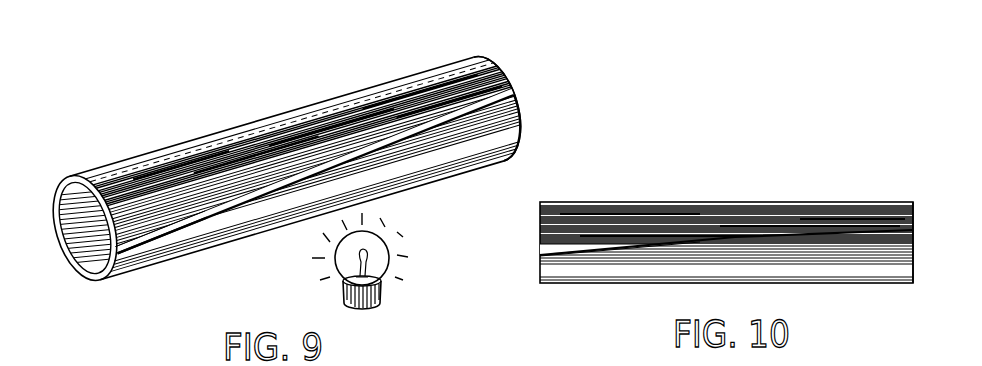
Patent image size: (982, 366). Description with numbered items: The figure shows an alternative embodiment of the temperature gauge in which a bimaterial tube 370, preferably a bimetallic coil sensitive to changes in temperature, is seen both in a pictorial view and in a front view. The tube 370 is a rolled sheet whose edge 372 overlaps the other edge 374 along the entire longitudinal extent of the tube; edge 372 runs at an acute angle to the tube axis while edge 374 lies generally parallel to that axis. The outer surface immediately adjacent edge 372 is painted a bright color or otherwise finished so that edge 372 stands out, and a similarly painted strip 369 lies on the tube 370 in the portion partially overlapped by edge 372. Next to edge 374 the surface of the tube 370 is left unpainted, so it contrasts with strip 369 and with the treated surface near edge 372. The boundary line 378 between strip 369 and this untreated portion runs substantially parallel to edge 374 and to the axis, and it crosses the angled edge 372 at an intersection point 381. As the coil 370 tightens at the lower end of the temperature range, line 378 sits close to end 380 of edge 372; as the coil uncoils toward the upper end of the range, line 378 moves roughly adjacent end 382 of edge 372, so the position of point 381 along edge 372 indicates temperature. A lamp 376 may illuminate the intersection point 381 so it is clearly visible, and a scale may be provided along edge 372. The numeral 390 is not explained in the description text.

In FIG. 9, the strip 369 is at (133, 172).
In FIG. 10, the strip 369 is at (566, 222).
In FIG. 9, the bimaterial tube 370 is at (309, 181).
In FIG. 10, the bimaterial tube 370 is at (703, 228).
In FIG. 9, the edge 372 is at (333, 161).
In FIG. 9, the edge 374 is at (99, 262).
In FIG. 9, the lamp 376 is at (342, 287).
In FIG. 10, the boundary line 378 is at (540, 248).
In FIG. 10, the end of edge 372 380 is at (540, 257).
In FIG. 9, the intersection point 381 is at (280, 168).
In FIG. 10, the intersection point 381 is at (670, 240).
In FIG. 9, the end of edge 372 382 is at (523, 116).
In FIG. 10, the end of edge 372 382 is at (914, 210).
In FIG. 10, the housing 390 is at (493, 365).